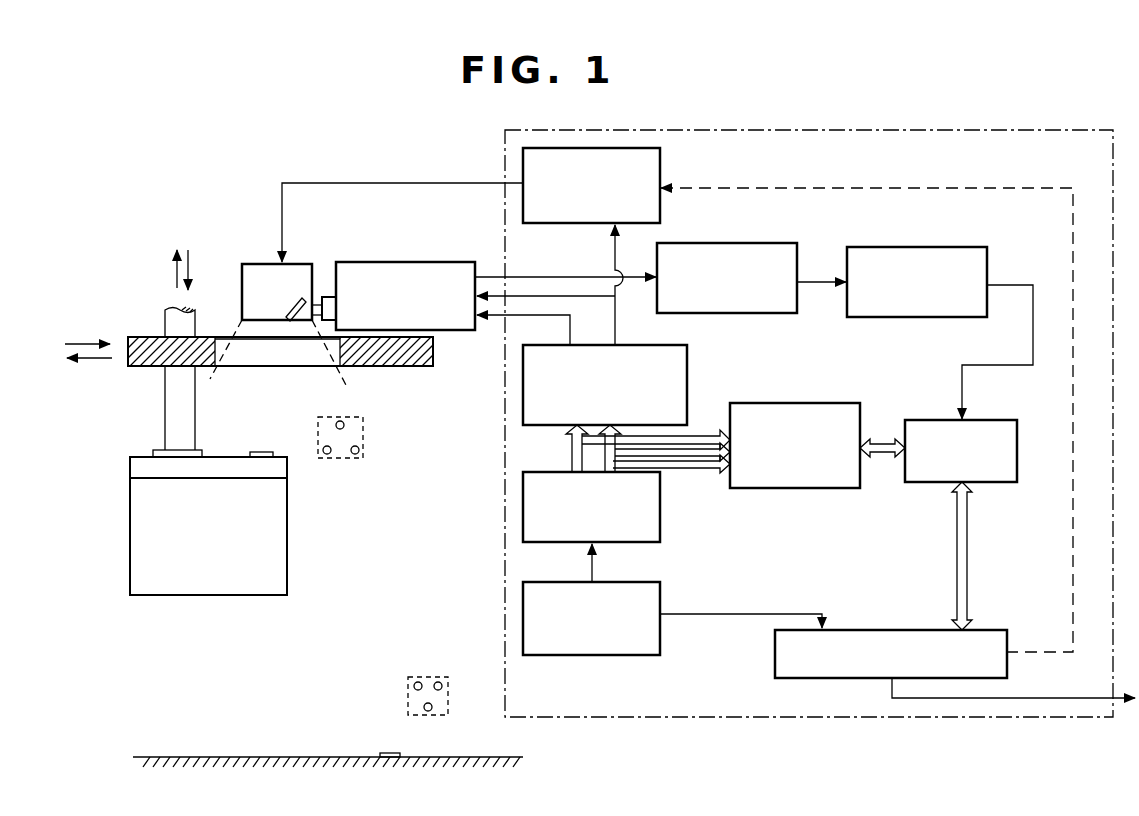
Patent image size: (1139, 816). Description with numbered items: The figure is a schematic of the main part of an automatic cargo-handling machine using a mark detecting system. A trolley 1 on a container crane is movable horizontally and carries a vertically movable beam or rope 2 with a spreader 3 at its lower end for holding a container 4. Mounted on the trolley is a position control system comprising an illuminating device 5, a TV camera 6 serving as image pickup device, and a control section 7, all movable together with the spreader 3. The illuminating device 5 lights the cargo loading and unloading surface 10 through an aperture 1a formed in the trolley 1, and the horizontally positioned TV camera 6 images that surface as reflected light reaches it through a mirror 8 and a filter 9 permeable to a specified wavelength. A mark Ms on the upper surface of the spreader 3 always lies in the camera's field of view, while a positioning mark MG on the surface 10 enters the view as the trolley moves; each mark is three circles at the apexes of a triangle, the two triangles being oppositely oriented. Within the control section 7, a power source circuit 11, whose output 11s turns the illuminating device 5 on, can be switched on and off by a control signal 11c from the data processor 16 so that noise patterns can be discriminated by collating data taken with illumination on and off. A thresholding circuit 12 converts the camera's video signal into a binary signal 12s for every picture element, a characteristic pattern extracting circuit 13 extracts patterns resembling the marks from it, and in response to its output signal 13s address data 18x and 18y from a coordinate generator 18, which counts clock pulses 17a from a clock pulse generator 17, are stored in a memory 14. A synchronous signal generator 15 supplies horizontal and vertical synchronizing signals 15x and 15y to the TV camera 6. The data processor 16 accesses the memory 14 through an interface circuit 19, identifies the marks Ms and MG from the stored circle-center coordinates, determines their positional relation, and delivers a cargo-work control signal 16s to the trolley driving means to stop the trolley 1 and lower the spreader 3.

The trolley 1 is at (397, 366).
The aperture 1a is at (248, 366).
The beam or rope 2 is at (165, 413).
The spreader 3 is at (130, 466).
The container 4 is at (130, 530).
The illuminating device 5 is at (300, 264).
The TV camera 6 is at (407, 262).
The control section 7 is at (695, 130).
The mirror 8 is at (289, 310).
The filter 9 is at (327, 297).
The cargo loading and unloading surface 10 is at (242, 757).
The power source circuit 11 is at (660, 165).
The power supply line 11s is at (443, 183).
The on-off control signal 11c is at (1073, 618).
The thresholding circuit 12 is at (726, 243).
The binary signal 12s is at (823, 282).
The characteristic pattern extracting circuit 13 is at (918, 247).
The output signal 13s is at (1033, 320).
The memory 14 is at (820, 403).
The synchronous signal generator 15 is at (687, 370).
The horizontal synchronizing signal 15x is at (517, 316).
The vertical synchronizing signal 15y is at (615, 333).
The data processor 16 is at (870, 630).
The cargo-work control signal 16s is at (1027, 698).
The clock pulse generator 17 is at (660, 600).
The clock pulse 17a is at (592, 563).
The coordinate generator 18 is at (660, 533).
The address data 18x is at (640, 436).
The address data 18y is at (650, 470).
The interface circuit 19 is at (930, 482).
The mark Ms is at (318, 441).
The positioning mark MG is at (408, 715).